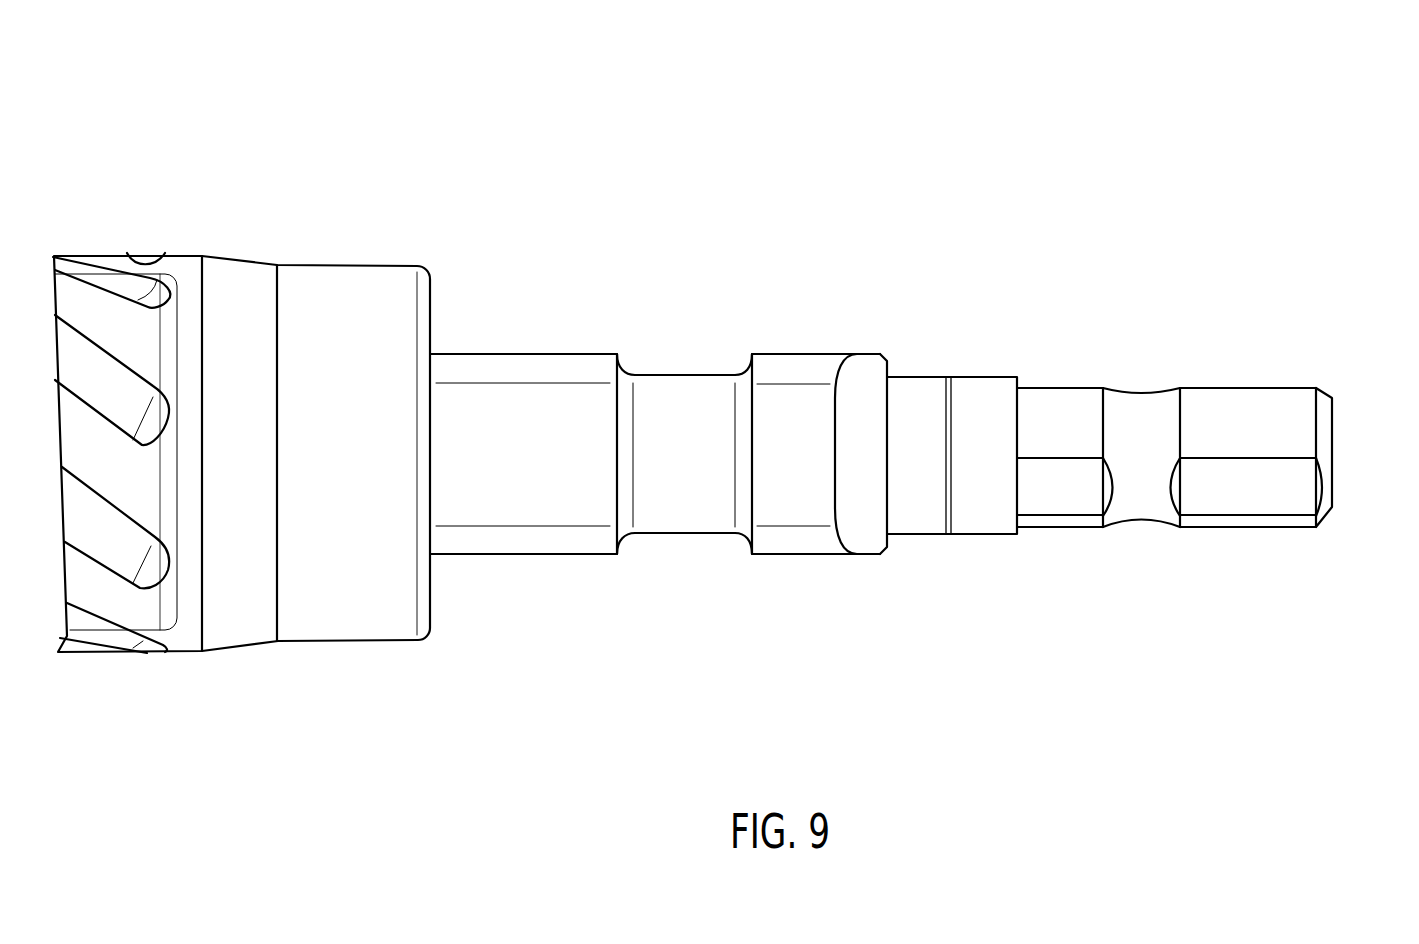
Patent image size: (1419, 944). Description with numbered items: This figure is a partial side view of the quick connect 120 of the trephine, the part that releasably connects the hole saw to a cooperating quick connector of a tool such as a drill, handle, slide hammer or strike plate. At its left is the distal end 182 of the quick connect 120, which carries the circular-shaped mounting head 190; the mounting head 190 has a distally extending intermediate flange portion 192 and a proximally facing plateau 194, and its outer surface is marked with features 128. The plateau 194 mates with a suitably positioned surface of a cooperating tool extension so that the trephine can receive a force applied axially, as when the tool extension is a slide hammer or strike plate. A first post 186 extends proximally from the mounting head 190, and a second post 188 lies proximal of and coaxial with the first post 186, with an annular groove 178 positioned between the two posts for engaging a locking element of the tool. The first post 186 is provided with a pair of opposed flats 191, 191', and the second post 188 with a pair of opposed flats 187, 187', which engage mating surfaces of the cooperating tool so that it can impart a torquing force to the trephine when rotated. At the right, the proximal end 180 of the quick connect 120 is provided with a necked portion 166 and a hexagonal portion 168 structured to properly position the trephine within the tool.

The distal end 182 is at (368, 114).
The quick connect 120 is at (1010, 125).
The flutes 128 is at (110, 318).
The intermediate flange portion 192 is at (228, 278).
The mounting head 190 is at (367, 278).
The proximally facing plateau 194 is at (442, 610).
The first post 186 is at (486, 357).
The flat surface 191 is at (523, 325).
The flat surface 191' is at (524, 585).
The annular groove 178 is at (698, 340).
The flat surface 187 is at (816, 409).
The flat surface 187' is at (795, 585).
The second post 188 is at (818, 425).
The proximal end 180 is at (1368, 340).
The hexagonal portion 168 is at (1248, 402).
The necked portion 166 is at (1132, 498).